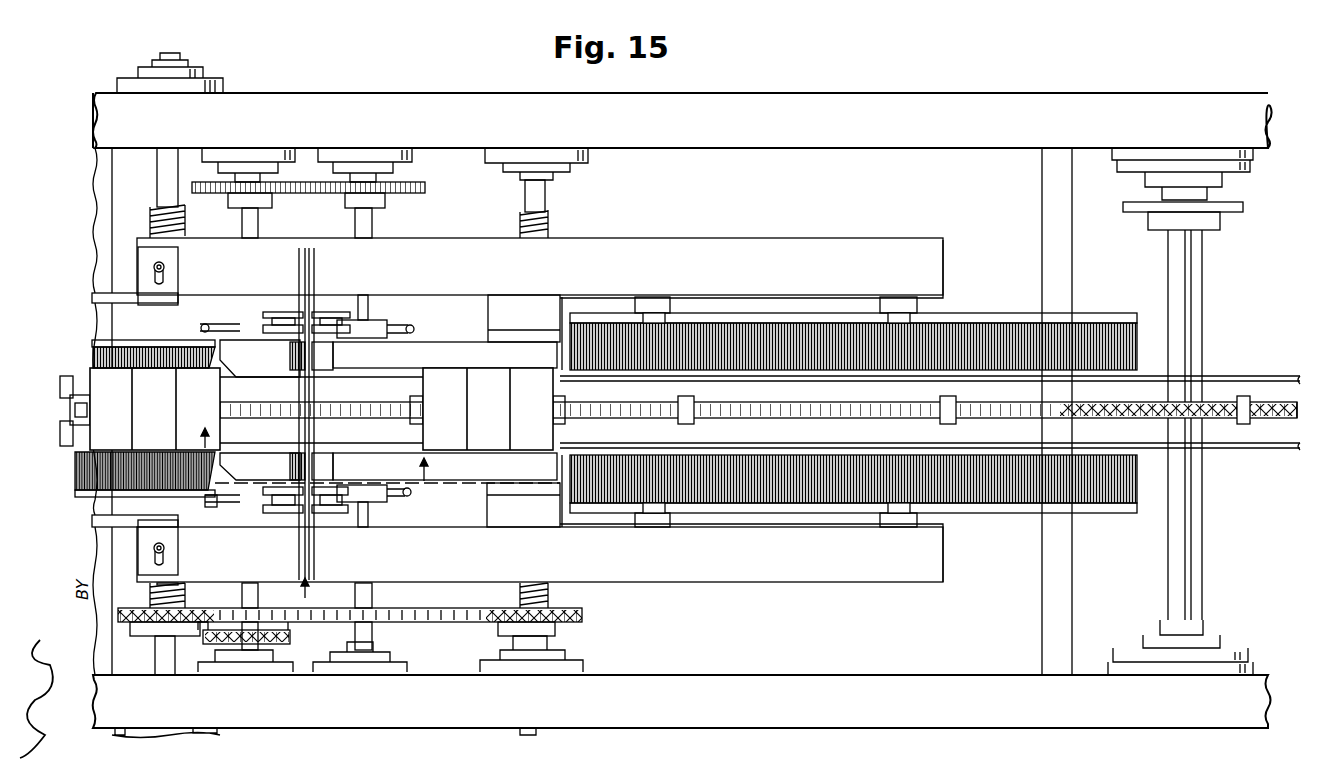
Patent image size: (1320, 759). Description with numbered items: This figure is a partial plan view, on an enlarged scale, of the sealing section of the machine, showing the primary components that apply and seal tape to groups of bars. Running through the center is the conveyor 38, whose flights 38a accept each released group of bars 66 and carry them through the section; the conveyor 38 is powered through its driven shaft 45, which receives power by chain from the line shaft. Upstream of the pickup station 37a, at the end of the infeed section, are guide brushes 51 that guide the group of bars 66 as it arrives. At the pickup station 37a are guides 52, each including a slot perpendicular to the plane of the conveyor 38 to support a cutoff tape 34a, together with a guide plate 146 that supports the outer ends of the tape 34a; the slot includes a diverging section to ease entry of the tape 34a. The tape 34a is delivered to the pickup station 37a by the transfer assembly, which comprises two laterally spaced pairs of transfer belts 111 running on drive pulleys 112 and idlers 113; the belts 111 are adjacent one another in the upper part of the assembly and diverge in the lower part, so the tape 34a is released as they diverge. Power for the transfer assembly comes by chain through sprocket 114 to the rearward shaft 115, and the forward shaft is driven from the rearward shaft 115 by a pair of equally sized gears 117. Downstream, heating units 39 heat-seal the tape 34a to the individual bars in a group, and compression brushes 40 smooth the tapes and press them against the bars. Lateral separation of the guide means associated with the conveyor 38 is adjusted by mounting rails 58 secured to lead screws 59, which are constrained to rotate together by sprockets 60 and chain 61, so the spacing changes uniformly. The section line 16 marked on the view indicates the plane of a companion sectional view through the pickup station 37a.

The section line 16 is at (317, 453).
The cross shaft 34a is at (306, 398).
The drive shaft 37a is at (327, 593).
The rack bar 38 is at (1292, 445).
The rack bar guide 38a is at (712, 410).
The guide plate 39 is at (413, 358).
The brush 40 is at (843, 368).
The vertical shaft 45 is at (1178, 551).
The brush 51 is at (98, 356).
The support plate 52 is at (238, 352).
The frame bar 58 is at (640, 251).
The compression spring 59 is at (160, 212).
The bearing block 60 is at (140, 627).
The rail 61 is at (388, 613).
The stacking units 66 is at (123, 419).
The pin 111 is at (216, 326).
The cylinder 112 is at (372, 324).
The roller 113 is at (272, 331).
The rail 114 is at (275, 645).
The shaft 115 is at (250, 226).
The gear 117 is at (285, 192).
The shaft 146 is at (298, 267).